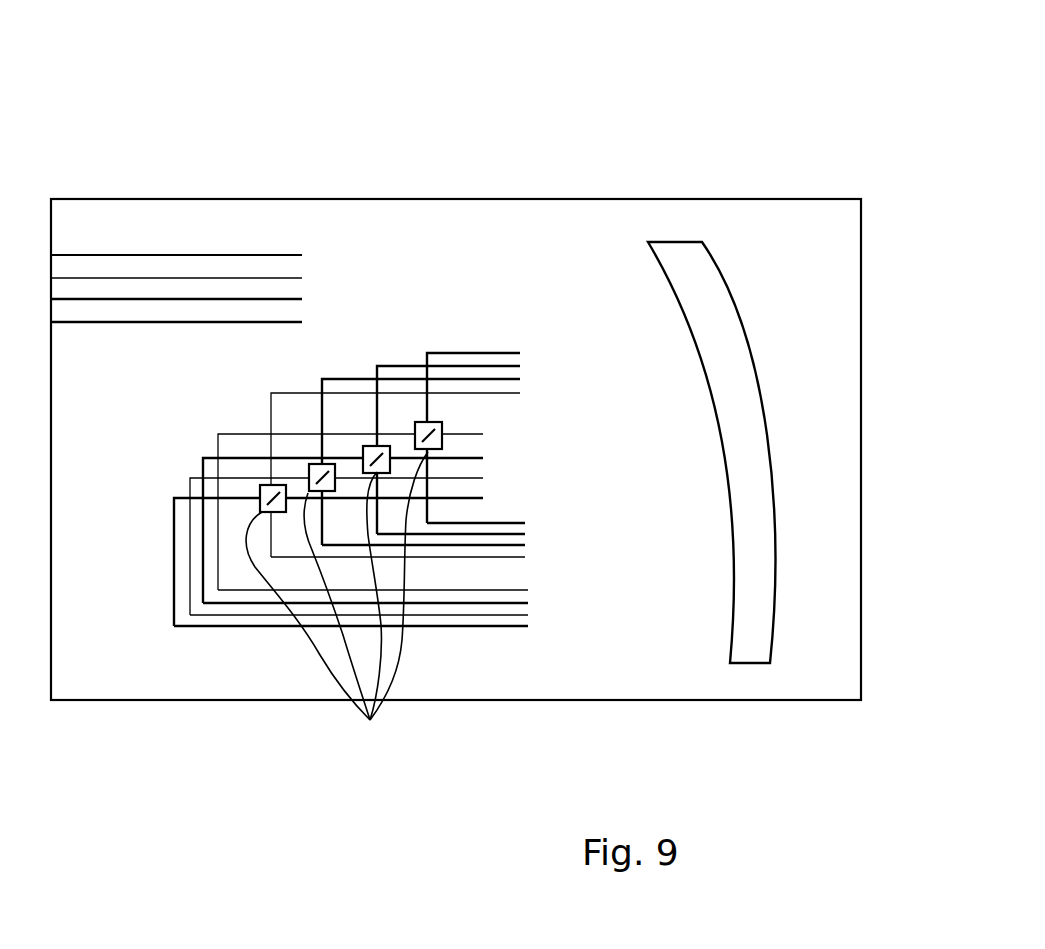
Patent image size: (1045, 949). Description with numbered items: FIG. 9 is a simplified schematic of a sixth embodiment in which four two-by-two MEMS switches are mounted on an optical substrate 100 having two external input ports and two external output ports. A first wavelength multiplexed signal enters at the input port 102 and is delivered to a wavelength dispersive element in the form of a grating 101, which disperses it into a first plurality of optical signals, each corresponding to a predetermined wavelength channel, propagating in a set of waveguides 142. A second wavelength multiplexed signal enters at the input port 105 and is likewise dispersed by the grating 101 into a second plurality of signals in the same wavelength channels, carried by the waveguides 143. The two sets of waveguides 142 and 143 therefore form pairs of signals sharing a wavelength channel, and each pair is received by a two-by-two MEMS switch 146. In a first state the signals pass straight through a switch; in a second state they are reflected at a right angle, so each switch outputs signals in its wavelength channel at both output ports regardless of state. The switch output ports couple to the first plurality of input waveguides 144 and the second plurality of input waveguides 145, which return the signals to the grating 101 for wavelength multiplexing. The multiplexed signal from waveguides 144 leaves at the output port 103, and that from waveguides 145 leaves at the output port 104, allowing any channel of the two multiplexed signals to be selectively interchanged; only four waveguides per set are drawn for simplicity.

The optical substrate 100 is at (802, 235).
The grating 101 is at (733, 327).
The input port 102 is at (52, 254).
The output port 103 is at (53, 298).
The output port 104 is at (53, 323).
The input port 105 is at (53, 277).
The set of waveguides 142 is at (525, 343).
The waveguides 143 is at (505, 428).
The first plurality of input waveguides 144 is at (528, 518).
The second plurality of input waveguides 145 is at (531, 587).
The 2×2 MEMS switch 146 is at (370, 720).